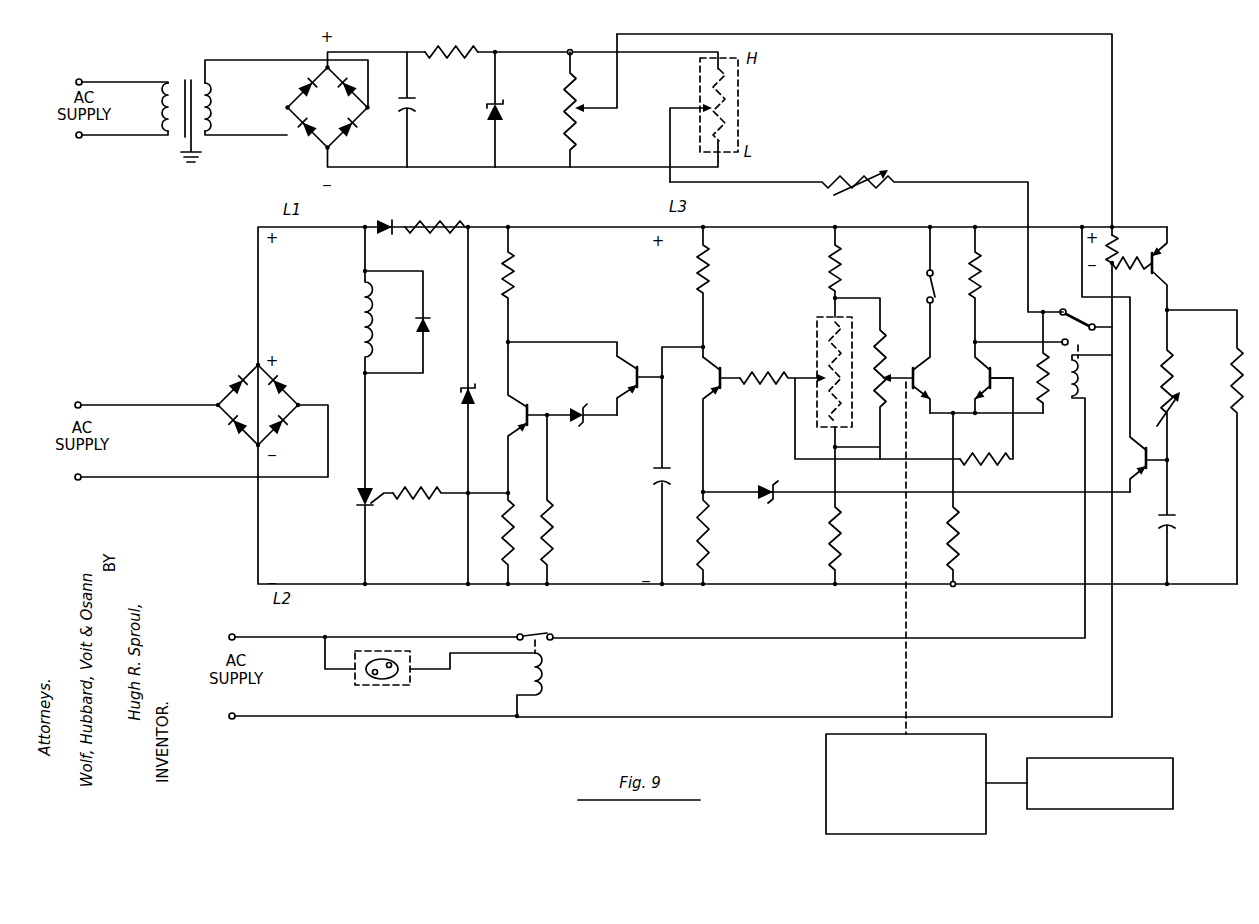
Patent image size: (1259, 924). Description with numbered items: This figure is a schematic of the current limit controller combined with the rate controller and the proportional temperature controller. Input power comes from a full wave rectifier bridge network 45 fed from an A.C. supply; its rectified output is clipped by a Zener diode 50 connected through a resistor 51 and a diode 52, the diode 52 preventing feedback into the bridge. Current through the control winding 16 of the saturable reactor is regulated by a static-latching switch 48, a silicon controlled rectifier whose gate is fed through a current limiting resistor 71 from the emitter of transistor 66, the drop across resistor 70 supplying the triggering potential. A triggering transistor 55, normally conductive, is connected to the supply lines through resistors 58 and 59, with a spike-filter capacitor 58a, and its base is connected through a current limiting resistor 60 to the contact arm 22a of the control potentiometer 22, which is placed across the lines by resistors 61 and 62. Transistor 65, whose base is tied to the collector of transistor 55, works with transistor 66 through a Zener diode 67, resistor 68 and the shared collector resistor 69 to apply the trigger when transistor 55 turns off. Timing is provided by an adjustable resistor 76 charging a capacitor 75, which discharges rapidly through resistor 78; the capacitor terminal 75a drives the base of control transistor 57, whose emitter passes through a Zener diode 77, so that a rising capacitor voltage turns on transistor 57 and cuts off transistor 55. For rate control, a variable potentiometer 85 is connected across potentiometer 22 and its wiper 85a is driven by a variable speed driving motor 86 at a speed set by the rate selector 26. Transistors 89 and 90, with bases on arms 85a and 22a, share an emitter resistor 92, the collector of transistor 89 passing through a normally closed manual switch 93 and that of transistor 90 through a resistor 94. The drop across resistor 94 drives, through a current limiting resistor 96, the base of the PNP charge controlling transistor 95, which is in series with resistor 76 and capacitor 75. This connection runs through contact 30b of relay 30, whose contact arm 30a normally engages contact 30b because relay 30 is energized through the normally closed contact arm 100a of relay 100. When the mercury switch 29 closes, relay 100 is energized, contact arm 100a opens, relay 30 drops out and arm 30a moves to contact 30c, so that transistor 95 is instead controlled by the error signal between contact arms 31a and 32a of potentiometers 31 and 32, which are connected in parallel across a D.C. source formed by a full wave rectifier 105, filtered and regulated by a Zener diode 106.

The full wave rectifier 105 is at (327, 107).
The Zener diode 106 is at (499, 101).
The potentiometer 32 is at (565, 131).
The contact arm 32a is at (609, 111).
The potentiometer 31 is at (740, 108).
The contact arm 31a is at (672, 106).
The diode 52 is at (384, 222).
The resistor 51 is at (442, 222).
The control winding 16 is at (358, 320).
The full wave rectifier bridge network 45 is at (258, 405).
The Zener diode 50 is at (462, 403).
The static-latching switch 48 is at (370, 510).
The current limiting resistor 71 is at (431, 501).
The resistor 69 is at (521, 281).
The transistor 66 is at (518, 417).
The Zener diode 67 is at (583, 425).
The transistor 65 is at (641, 393).
The resistor 70 is at (503, 531).
The resistor 68 is at (559, 553).
The resistor 58 is at (719, 279).
The capacitor 58a is at (659, 493).
The triggering transistor 55 is at (713, 381).
The current limiting resistor 60 is at (783, 386).
The resistor 59 is at (716, 561).
The Zener diode 77 is at (775, 497).
The resistor 61 is at (846, 272).
The control potentiometer 22 is at (815, 325).
The contact arm 22a is at (811, 371).
The resistor 62 is at (849, 553).
The variable potentiometer 85 is at (890, 331).
The wiper 85a is at (894, 372).
The transistor 89 is at (929, 368).
The transistor 90 is at (985, 379).
The resistor 92 is at (966, 557).
The manual switch 93 is at (928, 289).
The resistor 94 is at (986, 276).
The current limiting resistor 96 is at (1143, 240).
The charge controlling transistor 95 is at (1166, 268).
The relay 30 is at (1072, 402).
The contact arm 30a is at (1061, 323).
The contact 30b is at (1069, 343).
The contact 30c is at (1068, 309).
The adjustable resistor 76 is at (1181, 399).
The resistor 78 is at (1205, 447).
The capacitor 75 is at (1181, 521).
The terminal 75a is at (1176, 461).
The control transistor 57 is at (1121, 371).
The mercury switch 29 is at (388, 681).
The relay 100 is at (549, 686).
The contact arm 100a is at (556, 643).
The variable speed driving motor 86 is at (991, 752).
The rate selector 26 is at (1176, 788).